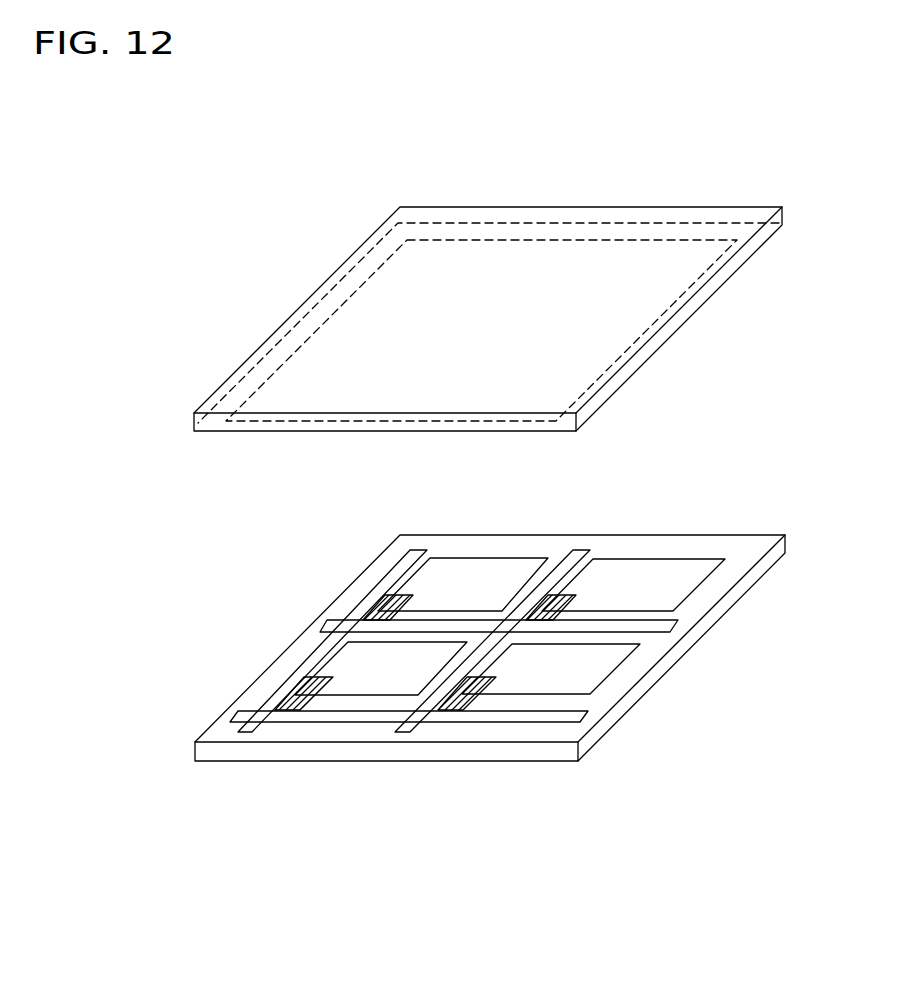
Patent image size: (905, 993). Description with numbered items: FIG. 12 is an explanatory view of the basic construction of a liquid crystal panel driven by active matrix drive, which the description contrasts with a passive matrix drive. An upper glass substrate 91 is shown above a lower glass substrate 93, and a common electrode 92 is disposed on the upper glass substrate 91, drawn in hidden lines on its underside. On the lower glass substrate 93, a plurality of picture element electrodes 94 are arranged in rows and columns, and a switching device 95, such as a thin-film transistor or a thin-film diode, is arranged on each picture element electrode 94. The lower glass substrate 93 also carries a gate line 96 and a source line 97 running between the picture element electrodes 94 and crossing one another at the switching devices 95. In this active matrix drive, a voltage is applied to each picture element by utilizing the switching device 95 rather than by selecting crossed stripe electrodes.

The upper glass substrate 91 is at (523, 223).
The common electrode 92 is at (622, 275).
The lower glass substrate 93 is at (527, 762).
The picture element electrode 94 is at (492, 575).
The switching device 95 is at (373, 612).
The gate line 96 is at (397, 733).
The source line 97 is at (588, 714).